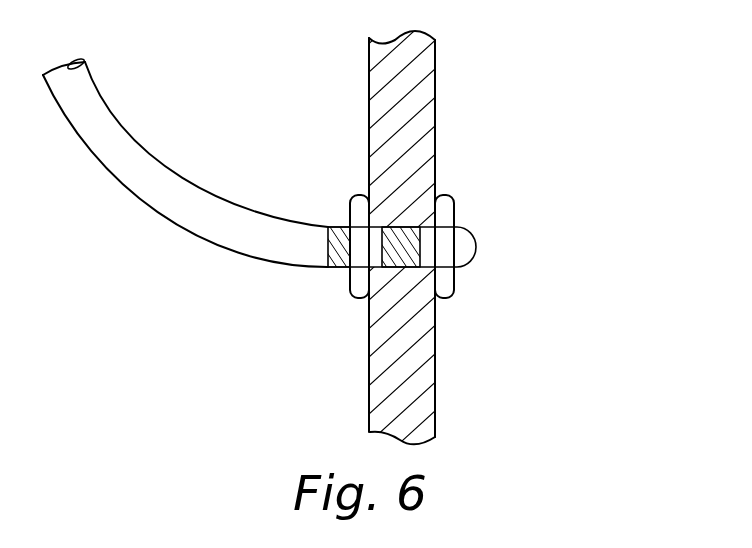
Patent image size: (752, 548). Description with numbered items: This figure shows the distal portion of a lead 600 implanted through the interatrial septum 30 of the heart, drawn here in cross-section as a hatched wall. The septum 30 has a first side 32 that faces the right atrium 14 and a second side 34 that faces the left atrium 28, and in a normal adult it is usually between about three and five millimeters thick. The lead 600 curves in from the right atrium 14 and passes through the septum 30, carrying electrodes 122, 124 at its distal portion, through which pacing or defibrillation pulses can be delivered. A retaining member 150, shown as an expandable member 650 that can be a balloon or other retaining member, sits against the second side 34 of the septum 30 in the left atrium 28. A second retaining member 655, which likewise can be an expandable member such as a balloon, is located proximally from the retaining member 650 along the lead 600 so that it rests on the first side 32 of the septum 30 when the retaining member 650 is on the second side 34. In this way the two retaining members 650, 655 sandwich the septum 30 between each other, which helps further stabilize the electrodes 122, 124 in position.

The right atrium 14 is at (255, 115).
The left atrium 28 is at (606, 113).
The interatrial septum 30 is at (423, 90).
The first side 32 is at (368, 137).
The second side 34 is at (437, 131).
The electrode 122 is at (407, 270).
The electrode 124 is at (342, 270).
The retaining member 150 is at (465, 188).
The lead 600 is at (123, 180).
The expandable member 650 is at (455, 212).
The second retaining member 655 is at (350, 212).